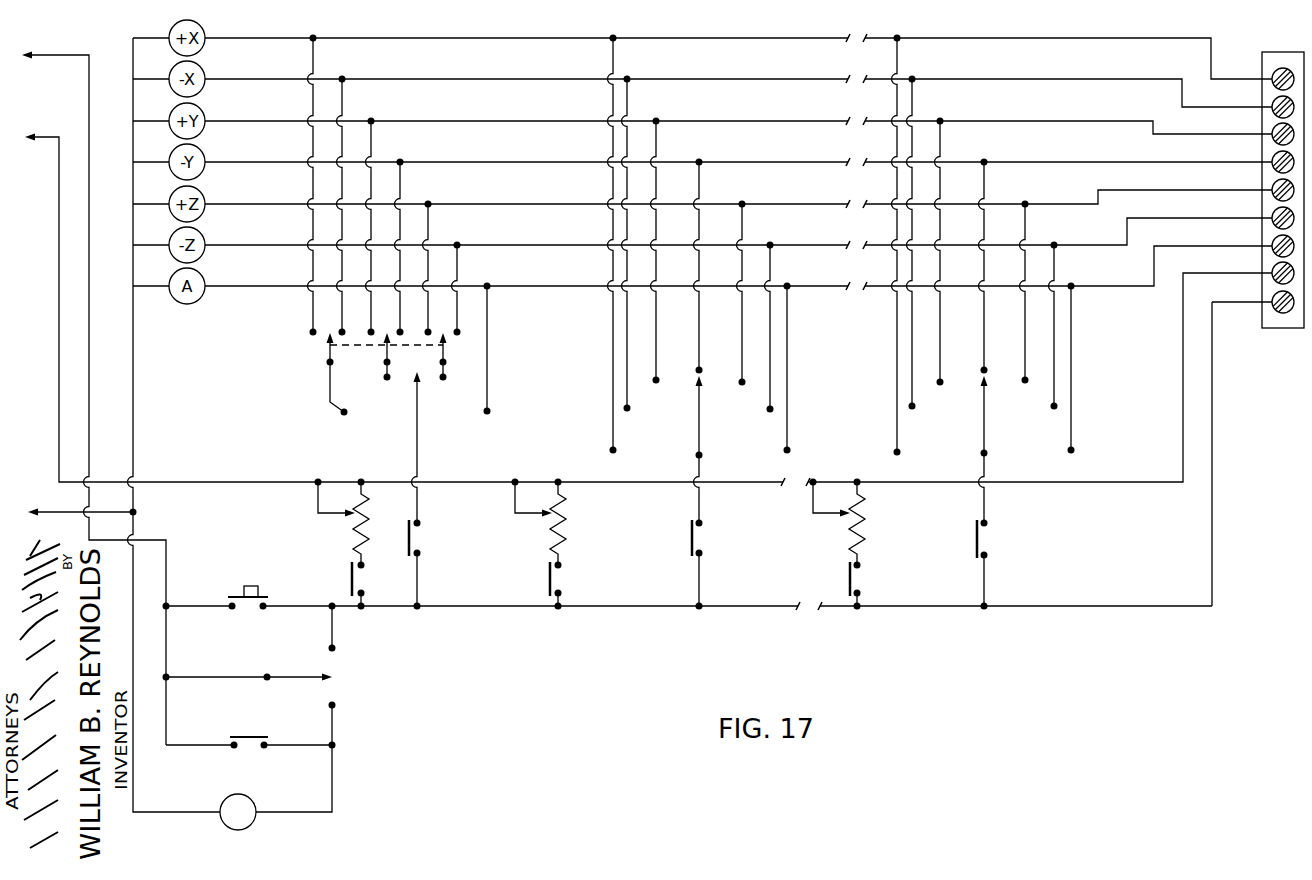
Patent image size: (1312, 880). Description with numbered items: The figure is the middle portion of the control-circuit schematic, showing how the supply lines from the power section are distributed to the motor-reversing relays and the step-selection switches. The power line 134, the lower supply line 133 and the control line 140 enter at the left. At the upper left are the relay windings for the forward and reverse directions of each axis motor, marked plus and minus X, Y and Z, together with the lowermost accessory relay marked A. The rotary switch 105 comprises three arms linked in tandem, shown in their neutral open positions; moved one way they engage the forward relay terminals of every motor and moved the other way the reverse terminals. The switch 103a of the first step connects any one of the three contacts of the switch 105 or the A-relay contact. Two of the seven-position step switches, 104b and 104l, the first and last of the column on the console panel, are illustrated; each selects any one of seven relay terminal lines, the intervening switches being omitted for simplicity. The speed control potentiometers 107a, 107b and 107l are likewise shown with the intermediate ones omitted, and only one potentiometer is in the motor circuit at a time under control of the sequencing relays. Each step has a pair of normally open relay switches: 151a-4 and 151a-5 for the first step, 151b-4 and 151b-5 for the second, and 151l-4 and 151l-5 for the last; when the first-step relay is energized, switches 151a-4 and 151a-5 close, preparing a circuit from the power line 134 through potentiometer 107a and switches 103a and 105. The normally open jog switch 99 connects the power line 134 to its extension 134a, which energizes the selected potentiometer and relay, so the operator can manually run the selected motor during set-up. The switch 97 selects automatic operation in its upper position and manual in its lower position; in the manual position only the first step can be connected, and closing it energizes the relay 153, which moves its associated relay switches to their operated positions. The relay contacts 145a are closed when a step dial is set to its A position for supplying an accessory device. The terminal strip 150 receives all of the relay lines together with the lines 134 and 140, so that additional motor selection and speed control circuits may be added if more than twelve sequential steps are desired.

The power line 134 is at (59, 53).
The control line 140 is at (44, 136).
The lower supply line 133 is at (47, 514).
The power line extension 134a is at (580, 607).
The terminal strip 150 is at (1280, 53).
The rotary selector switch 105 is at (318, 408).
The rotary selector switch 103a is at (418, 423).
The step selector switch 104b is at (702, 426).
The step selector switch 104l is at (983, 321).
The speed control potentiometer 107a is at (362, 522).
The speed control potentiometer 107b is at (566, 521).
The speed control potentiometer 107l is at (862, 513).
The relay switch 151a-4 is at (351, 583).
The relay switch 151a-5 is at (450, 538).
The relay switch 151b-4 is at (550, 583).
The relay switch 151b-5 is at (693, 551).
The relay switch 151l-4 is at (825, 584).
The relay switch 151l-5 is at (951, 540).
The jog switch 99 is at (245, 599).
The manual switch 97 is at (303, 676).
The relay contacts 145a is at (251, 730).
The relay 153 is at (257, 805).